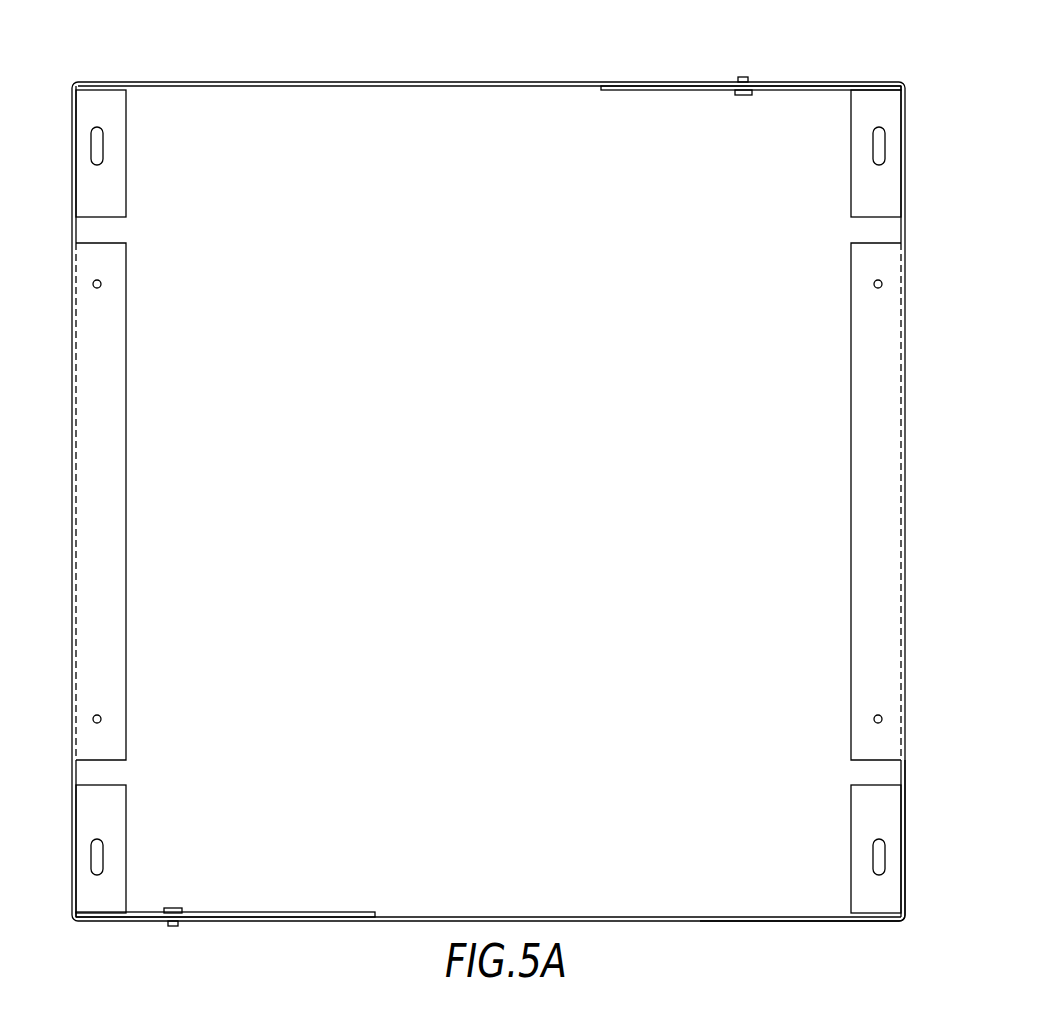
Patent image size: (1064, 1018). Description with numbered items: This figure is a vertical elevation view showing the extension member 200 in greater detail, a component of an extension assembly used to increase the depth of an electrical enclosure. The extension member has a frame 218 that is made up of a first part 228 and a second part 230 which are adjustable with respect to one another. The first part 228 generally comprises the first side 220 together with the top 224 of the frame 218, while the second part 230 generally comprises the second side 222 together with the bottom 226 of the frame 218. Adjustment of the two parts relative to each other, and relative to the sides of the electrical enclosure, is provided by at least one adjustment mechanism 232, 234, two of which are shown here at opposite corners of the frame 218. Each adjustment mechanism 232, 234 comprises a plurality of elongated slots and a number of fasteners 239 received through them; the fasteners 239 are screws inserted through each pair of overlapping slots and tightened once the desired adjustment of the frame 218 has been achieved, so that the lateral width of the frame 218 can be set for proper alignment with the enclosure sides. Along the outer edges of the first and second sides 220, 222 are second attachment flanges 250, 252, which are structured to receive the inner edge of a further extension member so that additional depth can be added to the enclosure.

The extension member 200 is at (295, 956).
The frame 218 is at (908, 878).
The first side 220 is at (72, 530).
The second side 222 is at (922, 336).
The top 224 is at (528, 82).
The bottom 226 is at (565, 915).
The first part 228 is at (200, 77).
The second part 230 is at (813, 925).
The adjustment mechanism 232 is at (731, 100).
The adjustment mechanism 234 is at (190, 905).
The fastener 239 is at (748, 97).
The second attachment flange 250 is at (117, 569).
The second attachment flange 252 is at (860, 416).